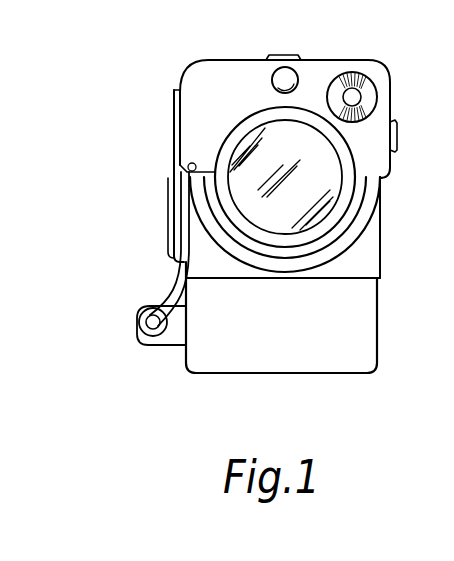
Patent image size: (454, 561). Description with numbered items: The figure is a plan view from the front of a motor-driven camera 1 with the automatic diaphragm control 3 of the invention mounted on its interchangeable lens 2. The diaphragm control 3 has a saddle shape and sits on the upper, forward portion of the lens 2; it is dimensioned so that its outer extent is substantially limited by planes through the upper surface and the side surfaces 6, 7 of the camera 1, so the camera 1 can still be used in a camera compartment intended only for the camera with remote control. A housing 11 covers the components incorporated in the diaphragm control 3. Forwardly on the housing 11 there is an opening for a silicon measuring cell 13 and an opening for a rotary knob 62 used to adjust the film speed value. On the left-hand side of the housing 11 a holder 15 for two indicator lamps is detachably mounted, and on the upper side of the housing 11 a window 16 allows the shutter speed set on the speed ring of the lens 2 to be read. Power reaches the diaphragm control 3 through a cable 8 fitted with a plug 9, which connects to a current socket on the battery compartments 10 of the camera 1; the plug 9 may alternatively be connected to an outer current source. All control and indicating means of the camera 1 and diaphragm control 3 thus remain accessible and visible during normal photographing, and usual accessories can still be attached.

The motor-driven camera 1 is at (278, 413).
The interchangeable lens 2 is at (330, 197).
The automatic diaphragm control 3 is at (232, 49).
The side surface 6 is at (174, 190).
The side surface 7 is at (383, 200).
The cable 8 is at (172, 300).
The plug 9 is at (175, 338).
The battery compartments 10 is at (237, 363).
The housing 11 is at (345, 67).
The silicon measuring cell 13 is at (294, 80).
The holder 15 is at (397, 137).
The window 16 is at (286, 56).
The rotary knob 62 is at (377, 101).